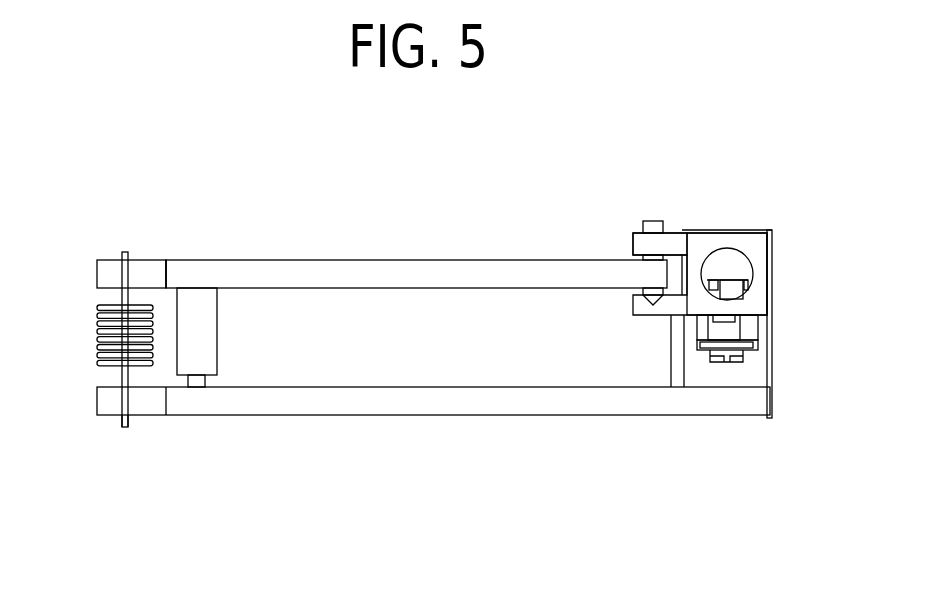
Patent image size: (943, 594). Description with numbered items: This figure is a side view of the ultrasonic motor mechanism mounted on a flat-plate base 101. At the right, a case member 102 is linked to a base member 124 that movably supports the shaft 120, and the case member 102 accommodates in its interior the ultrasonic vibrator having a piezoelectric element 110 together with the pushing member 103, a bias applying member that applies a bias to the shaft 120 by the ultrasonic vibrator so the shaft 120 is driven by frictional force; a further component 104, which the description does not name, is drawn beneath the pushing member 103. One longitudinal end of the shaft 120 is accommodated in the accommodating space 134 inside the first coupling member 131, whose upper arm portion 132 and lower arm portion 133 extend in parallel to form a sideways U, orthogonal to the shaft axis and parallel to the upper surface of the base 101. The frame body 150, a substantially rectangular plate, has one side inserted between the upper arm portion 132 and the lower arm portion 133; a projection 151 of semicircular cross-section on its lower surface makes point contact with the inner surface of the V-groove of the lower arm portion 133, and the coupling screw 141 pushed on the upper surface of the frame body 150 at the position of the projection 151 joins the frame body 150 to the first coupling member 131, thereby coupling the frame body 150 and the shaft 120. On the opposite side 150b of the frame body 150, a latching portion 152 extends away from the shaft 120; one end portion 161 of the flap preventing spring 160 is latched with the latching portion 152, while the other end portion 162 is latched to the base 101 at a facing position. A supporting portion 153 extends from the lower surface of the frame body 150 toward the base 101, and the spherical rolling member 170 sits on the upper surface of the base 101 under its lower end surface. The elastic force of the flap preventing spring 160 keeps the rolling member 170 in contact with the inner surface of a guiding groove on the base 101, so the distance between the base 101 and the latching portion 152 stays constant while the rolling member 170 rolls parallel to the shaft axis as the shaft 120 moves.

The base 101 is at (397, 408).
The case member 102 is at (762, 372).
The pushing member 103 is at (712, 345).
The mounting base 104 is at (732, 360).
The piezoelectric element 110 is at (737, 330).
The shaft 120 is at (745, 263).
The base member 124 is at (753, 229).
The first coupling member 131 is at (757, 247).
The upper arm portion 132 is at (635, 242).
The lower arm portion 133 is at (666, 308).
The accommodating space 134 is at (735, 293).
The coupling screw 141 is at (653, 222).
The frame body 150 is at (307, 272).
The side of the frame body 150b is at (161, 270).
The projection 151 is at (643, 302).
The latching portion 152 is at (105, 276).
The supporting portion 153 is at (208, 337).
The flap preventing spring 160 is at (97, 342).
The one end portion of the flap preventing spring 161 is at (124, 252).
The other end portion of the flap preventing spring 162 is at (124, 427).
The rolling member 170 is at (195, 382).